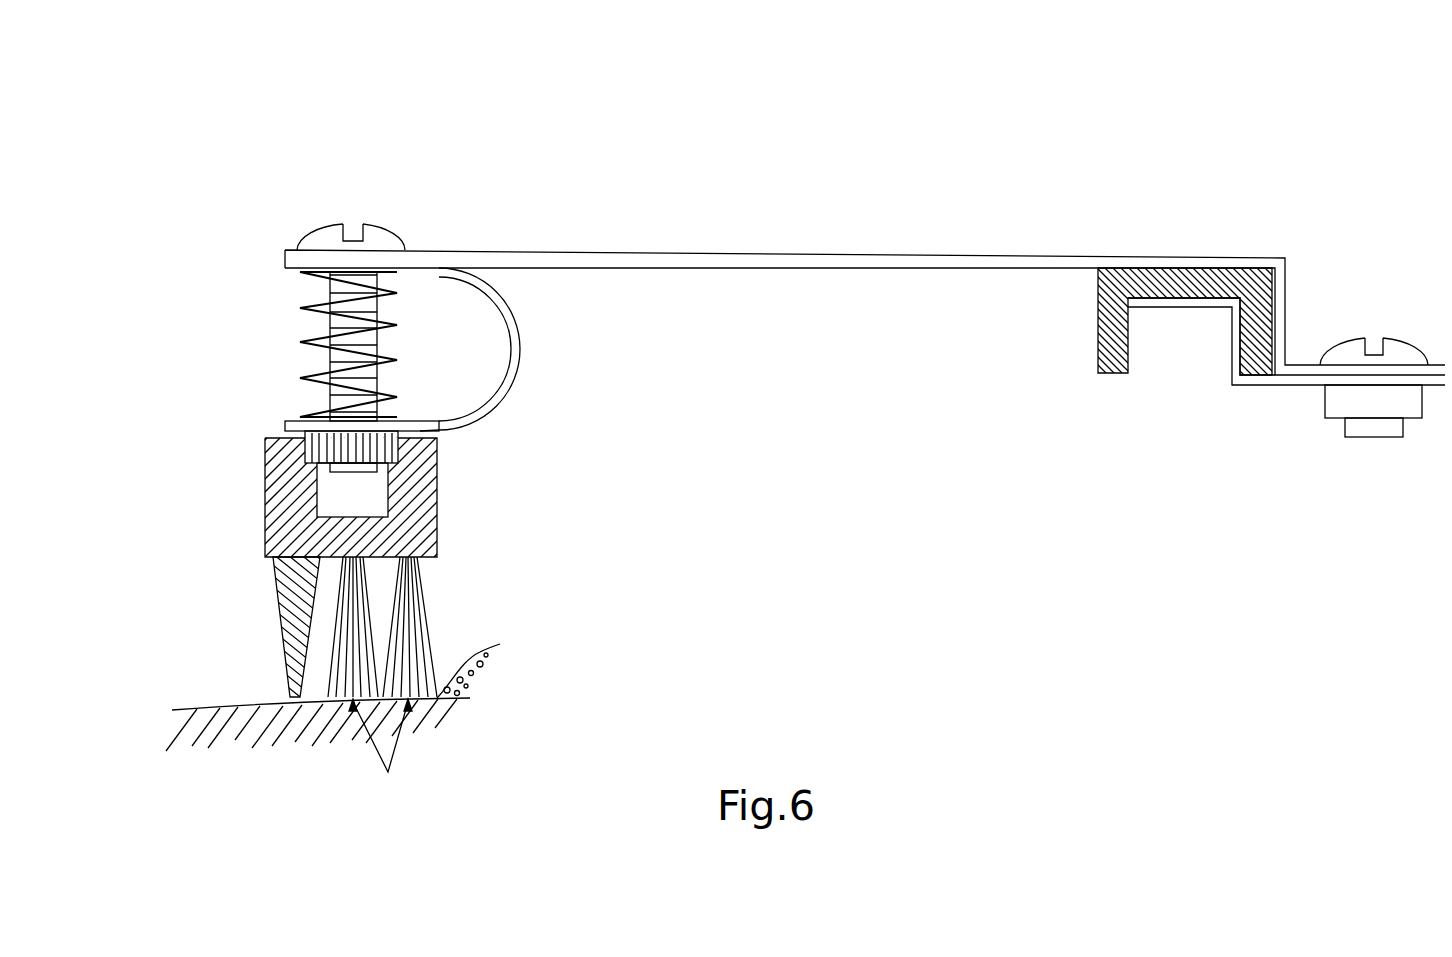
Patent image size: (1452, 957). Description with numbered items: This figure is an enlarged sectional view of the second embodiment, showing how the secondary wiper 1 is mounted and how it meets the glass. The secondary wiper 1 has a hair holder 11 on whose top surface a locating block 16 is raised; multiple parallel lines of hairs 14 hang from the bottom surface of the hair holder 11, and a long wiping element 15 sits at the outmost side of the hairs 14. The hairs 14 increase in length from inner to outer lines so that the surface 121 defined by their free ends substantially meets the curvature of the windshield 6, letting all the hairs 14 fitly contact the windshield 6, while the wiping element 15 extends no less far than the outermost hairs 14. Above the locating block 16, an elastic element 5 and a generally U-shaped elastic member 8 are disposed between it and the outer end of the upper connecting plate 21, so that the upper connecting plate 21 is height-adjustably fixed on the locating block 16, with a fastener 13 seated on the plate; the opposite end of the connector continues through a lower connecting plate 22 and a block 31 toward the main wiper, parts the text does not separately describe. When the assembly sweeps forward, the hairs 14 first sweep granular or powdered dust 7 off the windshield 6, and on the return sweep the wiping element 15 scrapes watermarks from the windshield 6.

The secondary wiper 1 is at (265, 475).
The elastic element 5 is at (306, 340).
The windshield 6 is at (193, 710).
The dust 7 is at (472, 662).
The U-shaped elastic member 8 is at (517, 370).
The hair holder 11 is at (423, 472).
The screw head 13 is at (380, 230).
The hairs 14 is at (423, 607).
The wiping element 15 is at (283, 573).
The locating block 16 is at (285, 432).
The upper connecting plate 21 is at (1168, 262).
The bracket plate 22 is at (1232, 365).
The clip block 31 is at (1100, 328).
The surface defined by free ends of the hairs 121 is at (380, 754).